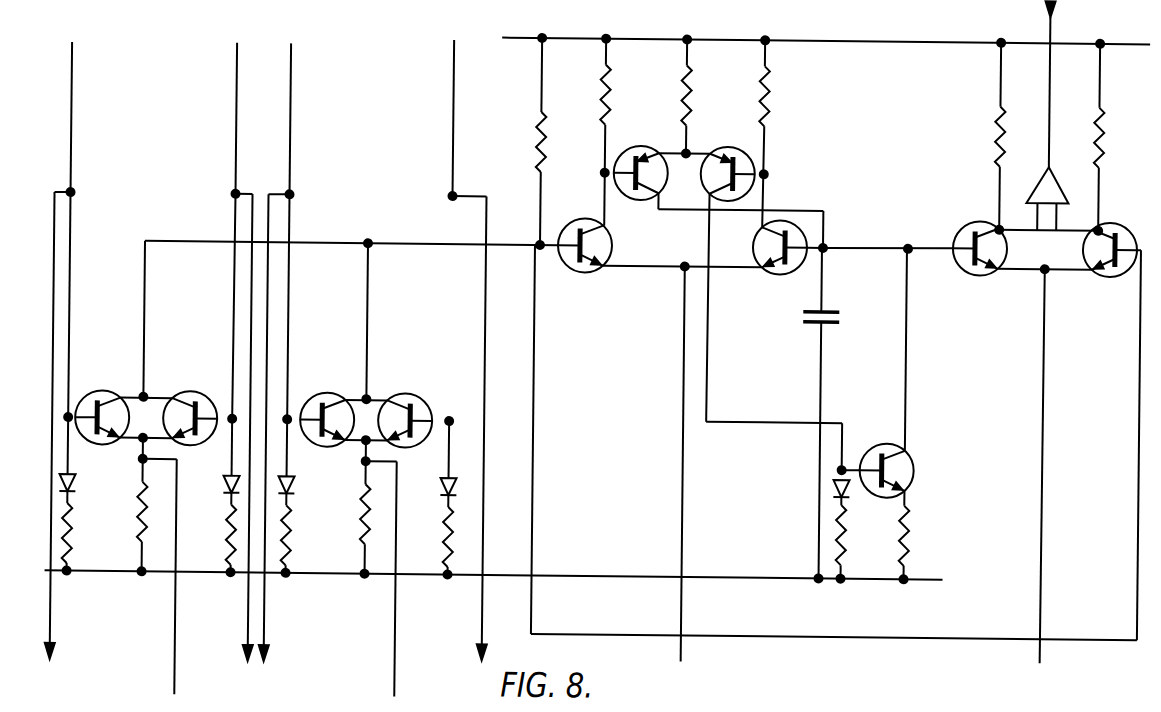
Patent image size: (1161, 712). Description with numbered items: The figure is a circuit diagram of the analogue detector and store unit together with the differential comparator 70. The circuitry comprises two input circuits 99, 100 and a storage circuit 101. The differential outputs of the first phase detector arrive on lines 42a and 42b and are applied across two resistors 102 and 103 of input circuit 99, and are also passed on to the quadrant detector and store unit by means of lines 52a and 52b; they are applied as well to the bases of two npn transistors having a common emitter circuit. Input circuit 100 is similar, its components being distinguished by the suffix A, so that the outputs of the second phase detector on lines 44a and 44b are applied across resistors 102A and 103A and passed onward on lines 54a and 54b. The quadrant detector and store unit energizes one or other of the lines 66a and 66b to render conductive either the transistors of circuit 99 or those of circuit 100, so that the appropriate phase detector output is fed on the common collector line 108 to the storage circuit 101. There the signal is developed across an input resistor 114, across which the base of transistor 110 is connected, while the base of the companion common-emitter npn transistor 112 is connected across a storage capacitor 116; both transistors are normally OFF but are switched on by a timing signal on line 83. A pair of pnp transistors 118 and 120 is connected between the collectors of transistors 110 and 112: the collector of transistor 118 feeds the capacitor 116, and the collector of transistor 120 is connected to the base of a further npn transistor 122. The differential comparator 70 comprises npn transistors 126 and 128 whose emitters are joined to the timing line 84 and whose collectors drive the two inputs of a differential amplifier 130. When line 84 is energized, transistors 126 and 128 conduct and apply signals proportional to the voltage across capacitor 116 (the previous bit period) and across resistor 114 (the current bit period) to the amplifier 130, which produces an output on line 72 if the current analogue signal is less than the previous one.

The line 42a is at (72, 66).
The line 42b is at (233, 102).
The line 44a is at (288, 113).
The line 44b is at (451, 106).
The line 52a is at (71, 287).
The line 52b is at (235, 309).
The line 54a is at (290, 288).
The line 54b is at (487, 262).
The input circuit 99 is at (102, 620).
The input circuit 100 is at (345, 622).
The storage circuit 101 is at (606, 507).
The resistor 102 is at (76, 527).
The resistor 103 is at (147, 536).
The resistor 102A is at (293, 521).
The resistor 103A is at (454, 522).
The line 66a is at (177, 681).
The line 66b is at (397, 681).
The line 108 is at (514, 242).
The input resistor 114 is at (532, 158).
The transistor 110 is at (606, 231).
The transistor 112 is at (756, 235).
The pnp transistor 118 is at (620, 151).
The pnp transistor 120 is at (724, 146).
The storage capacitor 116 is at (825, 320).
The npn transistor 122 is at (907, 476).
The npn transistor 126 is at (968, 258).
The npn transistor 128 is at (1105, 268).
The differential amplifier 130 is at (1038, 184).
The differential comparator 70 is at (1052, 255).
The line 72 is at (1051, 33).
The line 83 is at (680, 653).
The timing line 84 is at (1041, 650).